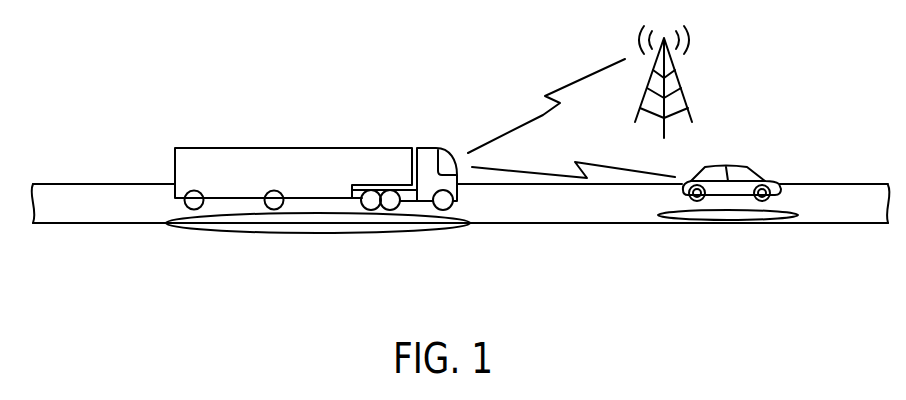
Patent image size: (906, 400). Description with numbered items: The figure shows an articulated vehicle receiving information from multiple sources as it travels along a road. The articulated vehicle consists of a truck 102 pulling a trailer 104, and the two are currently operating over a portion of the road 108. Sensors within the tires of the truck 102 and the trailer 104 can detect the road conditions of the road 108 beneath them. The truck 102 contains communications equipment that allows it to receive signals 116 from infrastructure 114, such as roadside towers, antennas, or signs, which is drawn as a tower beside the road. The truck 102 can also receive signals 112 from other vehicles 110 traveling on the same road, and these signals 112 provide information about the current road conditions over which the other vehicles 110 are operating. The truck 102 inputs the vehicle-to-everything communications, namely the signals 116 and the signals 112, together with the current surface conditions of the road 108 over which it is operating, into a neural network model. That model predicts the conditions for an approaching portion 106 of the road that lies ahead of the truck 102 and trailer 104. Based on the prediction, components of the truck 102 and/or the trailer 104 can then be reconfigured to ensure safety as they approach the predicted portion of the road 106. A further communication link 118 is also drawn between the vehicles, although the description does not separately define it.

The truck 102 is at (427, 148).
The trailer 104 is at (320, 148).
The approaching portion of the road 106 is at (492, 215).
The portion of the road 108 is at (345, 228).
The other vehicles 110 is at (750, 173).
The signals from other vehicles 112 is at (757, 215).
The infrastructure 114 is at (680, 82).
The signals from infrastructure 116 is at (543, 117).
The vehicle-to-vehicle communication link 118 is at (637, 170).